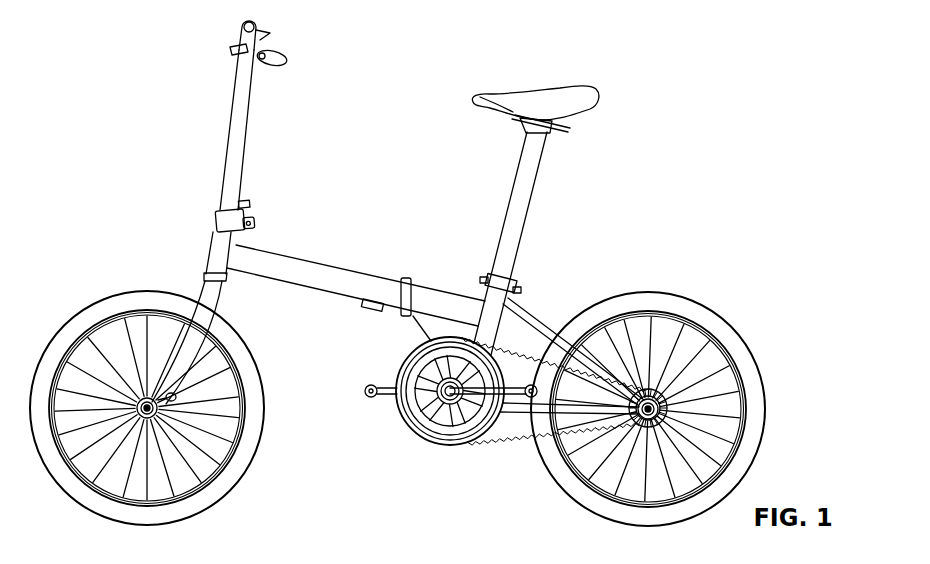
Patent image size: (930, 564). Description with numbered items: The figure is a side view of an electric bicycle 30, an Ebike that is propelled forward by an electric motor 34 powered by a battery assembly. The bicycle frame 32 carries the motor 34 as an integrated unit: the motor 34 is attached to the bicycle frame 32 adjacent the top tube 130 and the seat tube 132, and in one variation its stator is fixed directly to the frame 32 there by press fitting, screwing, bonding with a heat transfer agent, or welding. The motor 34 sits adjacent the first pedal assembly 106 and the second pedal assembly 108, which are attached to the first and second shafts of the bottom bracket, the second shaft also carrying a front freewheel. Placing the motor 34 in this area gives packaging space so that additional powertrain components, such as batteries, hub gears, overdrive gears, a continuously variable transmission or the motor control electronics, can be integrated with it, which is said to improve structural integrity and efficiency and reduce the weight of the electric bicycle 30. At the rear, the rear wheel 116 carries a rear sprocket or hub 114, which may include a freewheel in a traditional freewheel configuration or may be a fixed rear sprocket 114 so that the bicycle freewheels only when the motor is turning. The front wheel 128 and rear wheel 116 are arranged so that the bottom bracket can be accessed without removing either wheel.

The electric bicycle 30 is at (638, 57).
The bicycle frame 32 is at (277, 263).
The electric motor 34 is at (462, 453).
The first pedal assembly 106 is at (377, 392).
The second pedal assembly 108 is at (508, 410).
The rear sprocket 114 is at (693, 366).
The rear wheel 116 is at (767, 392).
The front wheel 128 is at (73, 328).
The top tube 130 is at (360, 282).
The seat tube 132 is at (531, 310).